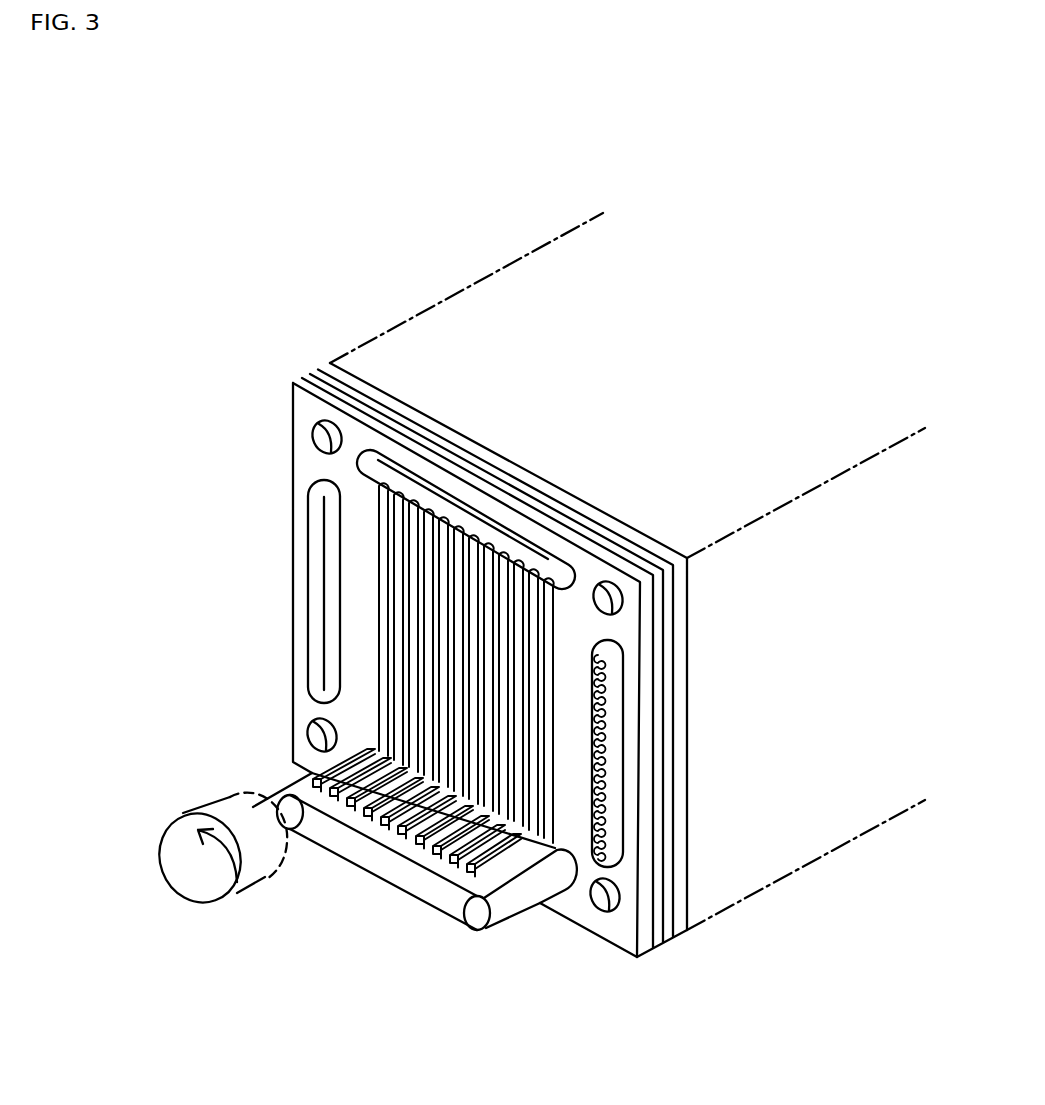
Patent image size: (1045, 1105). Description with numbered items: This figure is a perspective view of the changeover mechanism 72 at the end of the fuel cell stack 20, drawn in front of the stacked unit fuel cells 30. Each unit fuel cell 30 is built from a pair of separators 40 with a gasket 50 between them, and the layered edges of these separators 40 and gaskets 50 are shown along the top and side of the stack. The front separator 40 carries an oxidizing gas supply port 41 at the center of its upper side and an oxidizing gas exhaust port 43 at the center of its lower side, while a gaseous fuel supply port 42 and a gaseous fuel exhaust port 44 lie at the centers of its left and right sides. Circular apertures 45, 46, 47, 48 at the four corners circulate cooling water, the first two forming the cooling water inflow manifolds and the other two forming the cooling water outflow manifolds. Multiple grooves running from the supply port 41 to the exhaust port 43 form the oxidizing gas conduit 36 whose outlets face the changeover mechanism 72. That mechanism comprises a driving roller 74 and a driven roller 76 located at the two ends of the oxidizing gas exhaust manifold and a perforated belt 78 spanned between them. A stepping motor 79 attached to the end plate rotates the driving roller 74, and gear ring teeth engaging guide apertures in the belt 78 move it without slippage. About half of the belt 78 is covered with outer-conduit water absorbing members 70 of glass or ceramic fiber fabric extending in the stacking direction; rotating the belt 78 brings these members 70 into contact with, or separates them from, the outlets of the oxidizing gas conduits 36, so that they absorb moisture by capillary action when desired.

The fuel cell stack 20 is at (458, 293).
The unit fuel cell 30 is at (172, 200).
The separator 40 is at (332, 362).
The gasket 50 is at (318, 369).
The oxidizing gas conduit 36 is at (527, 548).
The oxidizing gas supply port 41 is at (427, 503).
The gaseous fuel supply port 42 is at (322, 553).
The oxidizing gas exhaust port 43 is at (567, 877).
The gaseous fuel exhaust port 44 is at (613, 771).
The circular aperture 45 is at (312, 733).
The circular aperture 46 is at (607, 897).
The circular aperture 47 is at (313, 438).
The circular aperture 48 is at (609, 585).
The outer-conduit water absorbing member 70 is at (462, 866).
The changeover mechanism 72 is at (372, 978).
The driving roller 74 is at (288, 814).
The driven roller 76 is at (467, 913).
The belt 78 is at (367, 823).
The stepping motor 79 is at (190, 885).